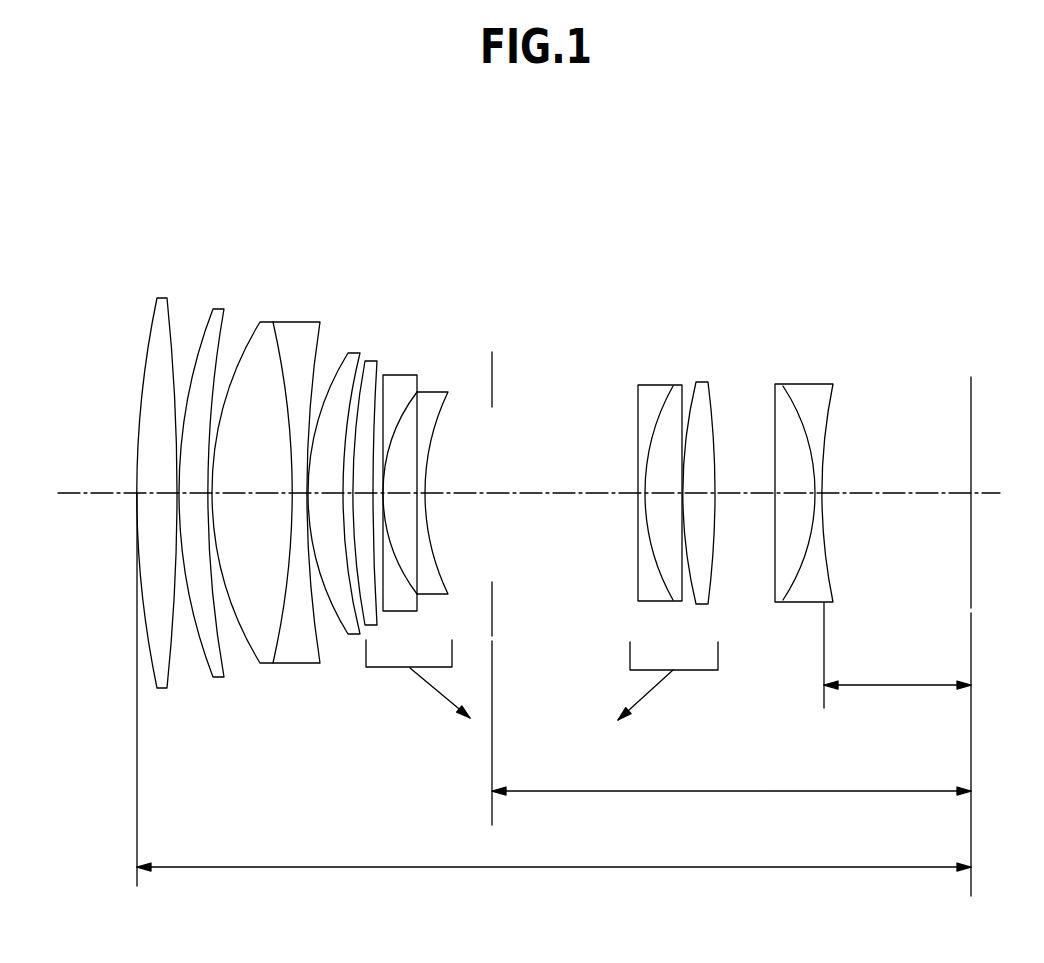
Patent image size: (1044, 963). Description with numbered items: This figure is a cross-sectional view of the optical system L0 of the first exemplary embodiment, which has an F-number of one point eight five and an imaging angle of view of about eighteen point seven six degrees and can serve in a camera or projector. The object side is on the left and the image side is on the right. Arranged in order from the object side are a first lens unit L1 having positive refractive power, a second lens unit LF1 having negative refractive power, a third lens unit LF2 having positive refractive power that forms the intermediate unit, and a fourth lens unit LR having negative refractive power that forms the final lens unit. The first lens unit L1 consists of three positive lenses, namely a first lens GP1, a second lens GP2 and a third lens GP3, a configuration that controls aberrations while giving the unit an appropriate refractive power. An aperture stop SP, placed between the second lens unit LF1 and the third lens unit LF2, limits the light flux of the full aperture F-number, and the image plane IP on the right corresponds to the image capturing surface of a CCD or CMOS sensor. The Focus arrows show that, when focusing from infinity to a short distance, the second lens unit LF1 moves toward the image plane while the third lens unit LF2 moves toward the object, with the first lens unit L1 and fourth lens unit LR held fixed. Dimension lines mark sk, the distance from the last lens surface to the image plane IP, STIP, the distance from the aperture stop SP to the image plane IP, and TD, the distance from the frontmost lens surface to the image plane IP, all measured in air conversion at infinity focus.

The optical system L0 is at (130, 157).
The first lens unit L1 is at (130, 213).
The second lens unit LF1 is at (363, 213).
The third lens unit LF2 is at (630, 213).
The fourth lens unit LR is at (762, 213).
The first lens GP1 is at (160, 308).
The second lens GP2 is at (218, 318).
The third lens GP3 is at (271, 332).
The aperture stop SP is at (493, 368).
The image plane IP is at (972, 408).
The back focus distance sk is at (897, 658).
The aperture stop to image plane distance STIP is at (731, 754).
The total lens length TD is at (554, 696).